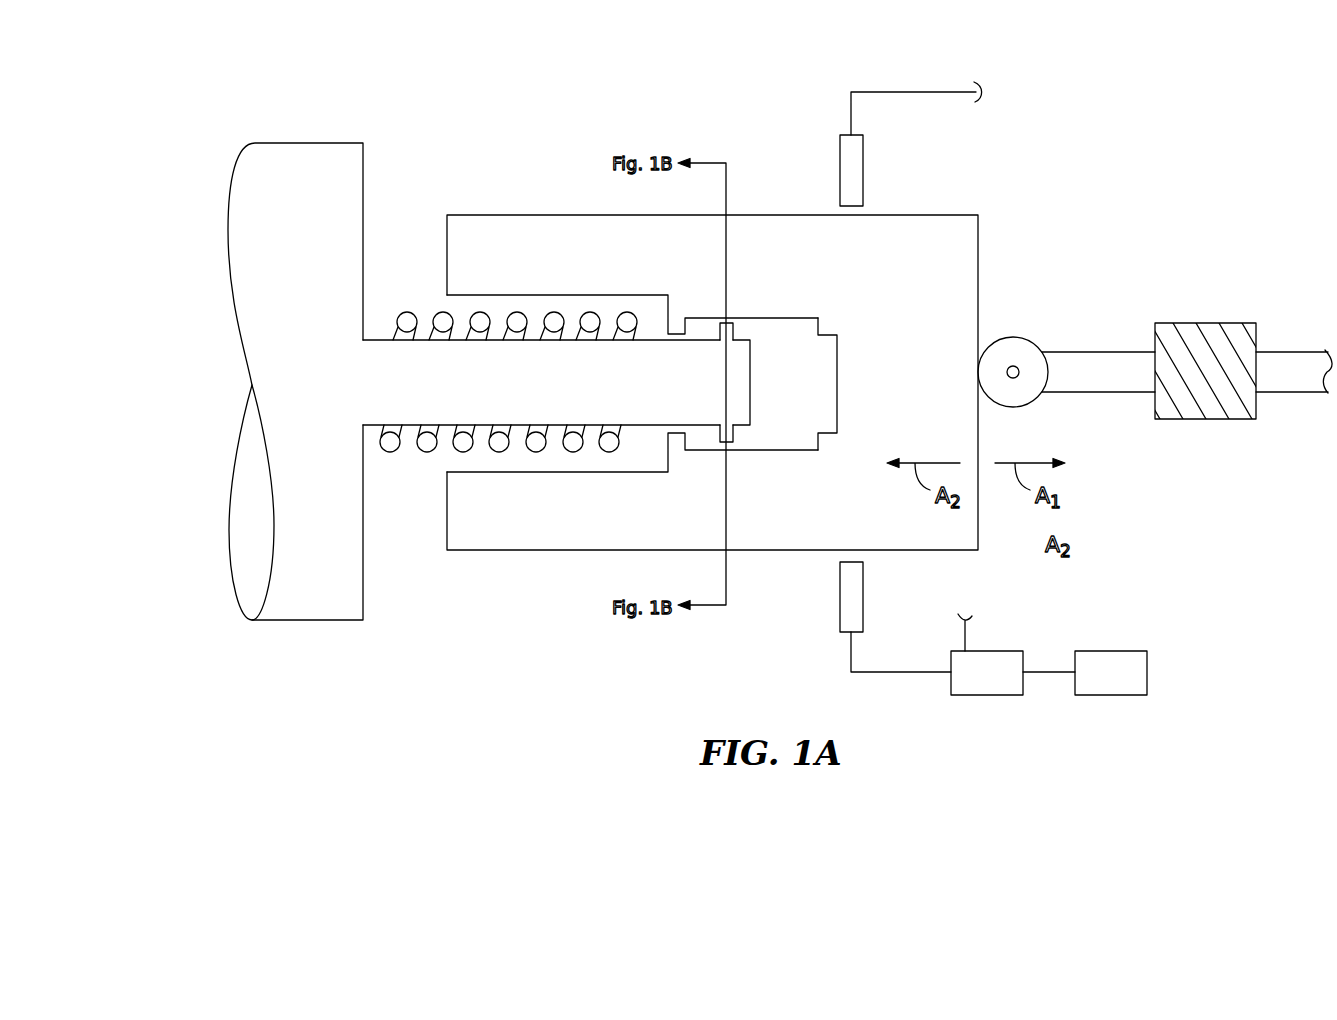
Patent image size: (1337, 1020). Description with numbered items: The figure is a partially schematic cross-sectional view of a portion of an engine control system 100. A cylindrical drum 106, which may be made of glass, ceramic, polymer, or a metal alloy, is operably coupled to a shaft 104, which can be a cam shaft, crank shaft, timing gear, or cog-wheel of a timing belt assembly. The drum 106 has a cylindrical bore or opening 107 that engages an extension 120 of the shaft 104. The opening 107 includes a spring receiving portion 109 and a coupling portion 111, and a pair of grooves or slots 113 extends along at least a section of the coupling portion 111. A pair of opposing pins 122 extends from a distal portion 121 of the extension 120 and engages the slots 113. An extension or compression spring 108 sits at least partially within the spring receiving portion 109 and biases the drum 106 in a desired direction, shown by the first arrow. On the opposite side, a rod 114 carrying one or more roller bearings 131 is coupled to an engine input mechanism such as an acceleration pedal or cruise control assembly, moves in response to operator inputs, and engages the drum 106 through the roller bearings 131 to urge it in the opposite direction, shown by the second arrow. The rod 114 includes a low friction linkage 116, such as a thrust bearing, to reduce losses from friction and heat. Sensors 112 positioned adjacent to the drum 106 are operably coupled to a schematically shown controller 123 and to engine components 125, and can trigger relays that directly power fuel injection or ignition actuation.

The engine control system 100 is at (1076, 165).
The shaft 104 is at (330, 143).
The cylindrical drum 106 is at (965, 215).
The cylindrical bore 107 is at (512, 298).
The spring 108 is at (390, 447).
The spring receiving portion 109 is at (523, 476).
The coupling portion 111 is at (801, 445).
The sensor 112 is at (863, 168).
The slot 113 is at (782, 320).
The rod 114 is at (1088, 352).
The low friction linkage 116 is at (1193, 323).
The extension 120 is at (374, 340).
The distal portion 121 is at (768, 373).
The pin 122 is at (712, 333).
The controller 123 is at (997, 651).
The engine component 125 is at (1117, 651).
The roller bearing 131 is at (1013, 337).